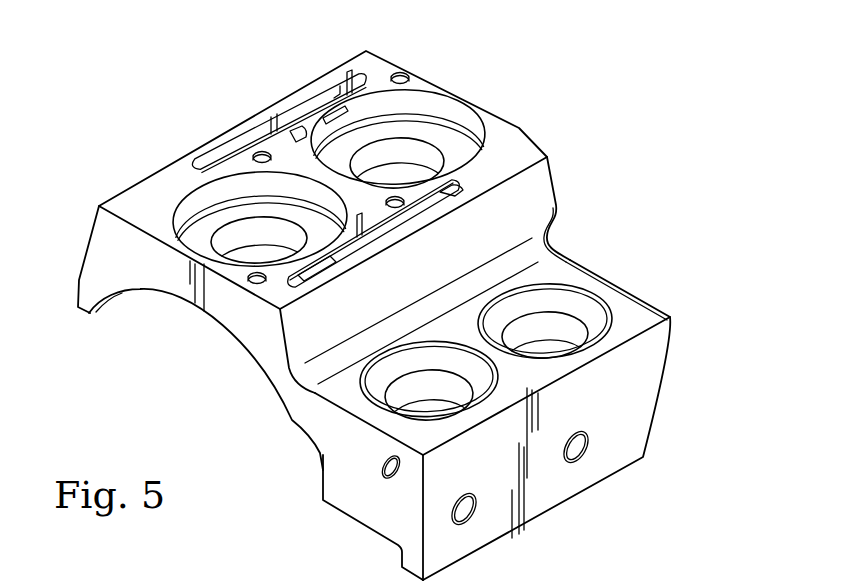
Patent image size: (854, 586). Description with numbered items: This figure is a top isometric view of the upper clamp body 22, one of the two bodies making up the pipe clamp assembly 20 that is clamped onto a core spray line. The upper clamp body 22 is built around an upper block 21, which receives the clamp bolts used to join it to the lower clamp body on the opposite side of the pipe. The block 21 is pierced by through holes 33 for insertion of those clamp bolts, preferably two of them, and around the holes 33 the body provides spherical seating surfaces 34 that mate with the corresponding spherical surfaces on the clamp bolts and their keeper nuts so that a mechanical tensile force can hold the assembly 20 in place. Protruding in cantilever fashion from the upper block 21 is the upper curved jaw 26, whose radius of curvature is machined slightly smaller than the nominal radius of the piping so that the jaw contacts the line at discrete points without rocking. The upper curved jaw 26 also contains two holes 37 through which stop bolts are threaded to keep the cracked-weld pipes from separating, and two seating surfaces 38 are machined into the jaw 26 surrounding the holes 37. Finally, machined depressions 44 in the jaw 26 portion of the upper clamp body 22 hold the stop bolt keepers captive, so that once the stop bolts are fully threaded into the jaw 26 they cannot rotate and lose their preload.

The pipe clamp assembly 20 is at (655, 357).
The upper block 21 is at (550, 503).
The upper clamp body 22 is at (528, 212).
The upper curved jaw 26 is at (196, 298).
The through holes 33 is at (555, 333).
The spherical seating surfaces 34 is at (485, 388).
The holes 37 is at (250, 252).
The seating surfaces 38 is at (191, 237).
The machined depressions 44 is at (224, 152).